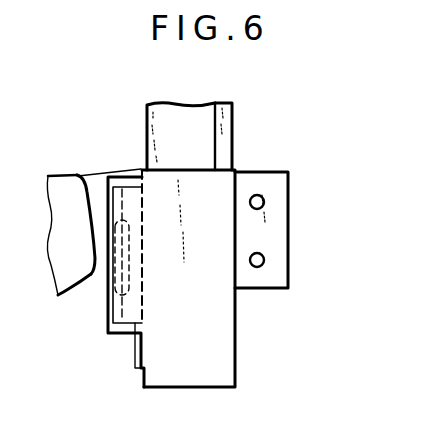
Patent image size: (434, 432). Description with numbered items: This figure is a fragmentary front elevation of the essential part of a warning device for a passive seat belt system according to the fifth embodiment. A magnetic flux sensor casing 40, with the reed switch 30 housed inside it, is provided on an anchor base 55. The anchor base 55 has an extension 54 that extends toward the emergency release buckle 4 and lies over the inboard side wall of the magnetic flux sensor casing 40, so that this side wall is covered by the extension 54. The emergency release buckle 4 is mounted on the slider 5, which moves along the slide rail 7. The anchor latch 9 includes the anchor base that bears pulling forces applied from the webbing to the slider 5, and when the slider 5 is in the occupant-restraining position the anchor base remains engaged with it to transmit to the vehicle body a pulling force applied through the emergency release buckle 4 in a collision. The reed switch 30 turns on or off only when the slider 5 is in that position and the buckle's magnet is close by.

The emergency release buckle 4 is at (67, 228).
The slider 5 is at (98, 177).
The slide rail 7 is at (203, 149).
The anchor latch 9 is at (292, 248).
The reed switch 30 is at (108, 283).
The magnetic flux sensor casing 40 is at (122, 336).
The extension 54 is at (128, 303).
The anchor base 55 is at (223, 340).